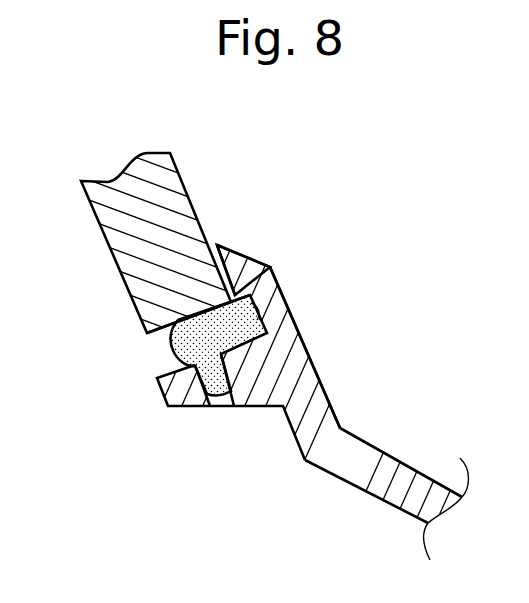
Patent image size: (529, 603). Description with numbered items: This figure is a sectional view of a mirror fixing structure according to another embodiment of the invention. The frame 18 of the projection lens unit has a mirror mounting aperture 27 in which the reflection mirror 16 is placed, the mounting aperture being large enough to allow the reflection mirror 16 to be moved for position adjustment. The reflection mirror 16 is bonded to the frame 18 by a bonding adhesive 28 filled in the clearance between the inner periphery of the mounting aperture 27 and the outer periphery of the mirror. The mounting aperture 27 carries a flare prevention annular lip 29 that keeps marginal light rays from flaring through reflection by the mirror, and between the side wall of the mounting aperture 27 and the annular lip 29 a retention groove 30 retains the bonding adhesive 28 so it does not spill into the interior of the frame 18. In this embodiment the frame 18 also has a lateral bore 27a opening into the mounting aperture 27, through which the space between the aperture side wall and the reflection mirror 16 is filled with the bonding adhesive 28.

The reflection mirror 16 is at (181, 190).
The frame 18 is at (378, 447).
The mirror mounting aperture 27 is at (175, 366).
The lateral bore 27a is at (223, 397).
The bonding adhesive 28 is at (170, 342).
The flare prevention annular lip 29 is at (225, 252).
The retention groove 30 is at (283, 296).